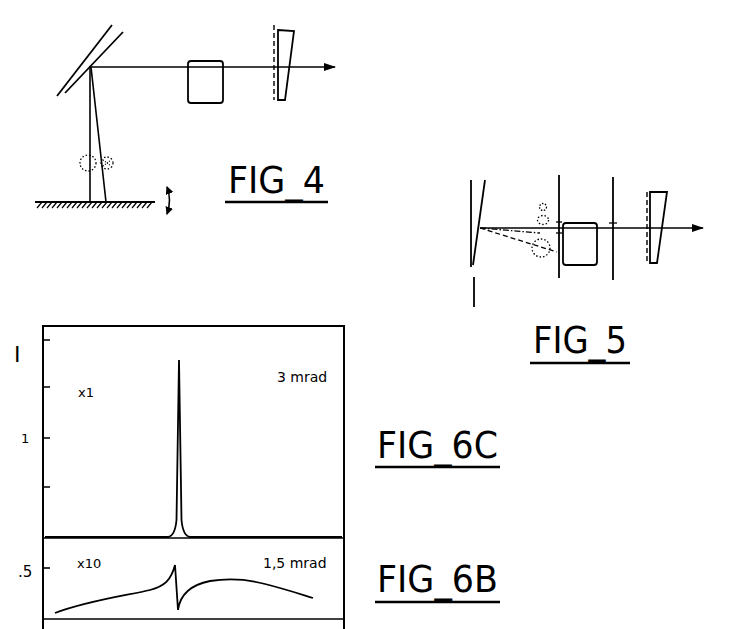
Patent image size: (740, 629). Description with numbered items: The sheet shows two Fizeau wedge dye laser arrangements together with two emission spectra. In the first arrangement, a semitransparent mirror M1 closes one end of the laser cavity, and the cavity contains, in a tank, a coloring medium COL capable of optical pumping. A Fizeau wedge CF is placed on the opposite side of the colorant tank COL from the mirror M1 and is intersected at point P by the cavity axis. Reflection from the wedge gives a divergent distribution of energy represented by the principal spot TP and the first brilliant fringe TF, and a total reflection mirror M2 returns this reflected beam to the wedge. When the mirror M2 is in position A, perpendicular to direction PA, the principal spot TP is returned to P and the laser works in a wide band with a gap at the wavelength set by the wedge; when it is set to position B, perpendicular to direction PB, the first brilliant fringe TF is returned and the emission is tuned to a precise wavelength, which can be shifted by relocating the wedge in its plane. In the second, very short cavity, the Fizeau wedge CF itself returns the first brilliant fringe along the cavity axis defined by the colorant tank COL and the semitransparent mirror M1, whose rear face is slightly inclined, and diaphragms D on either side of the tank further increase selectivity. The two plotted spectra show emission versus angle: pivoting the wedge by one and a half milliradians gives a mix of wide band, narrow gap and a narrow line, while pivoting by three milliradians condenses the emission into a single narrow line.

In FIG. 4, the Fizeau wedge CF is at (82, 63).
In FIG. 5, the Fizeau wedge CF is at (452, 243).
In FIG. 4, the intersection point of cavity axis on Fizeau wedge P is at (96, 75).
In FIG. 4, the principal spot TP is at (80, 158).
In FIG. 5, the principal spot TP is at (535, 227).
In FIG. 4, the first brilliant fringe of reflection TF is at (112, 158).
In FIG. 4, the total reflection mirror M2 is at (100, 197).
In FIG. 4, the position A of mirror M2 A is at (89, 147).
In FIG. 4, the position B of mirror M2 B is at (105, 147).
In FIG. 4, the coloring medium COL is at (205, 82).
In FIG. 5, the coloring medium COL is at (580, 244).
In FIG. 4, the semitransparent mirror M1 is at (285, 78).
In FIG. 5, the semitransparent mirror M1 is at (657, 247).
In FIG. 5, the diaphragm D is at (593, 227).